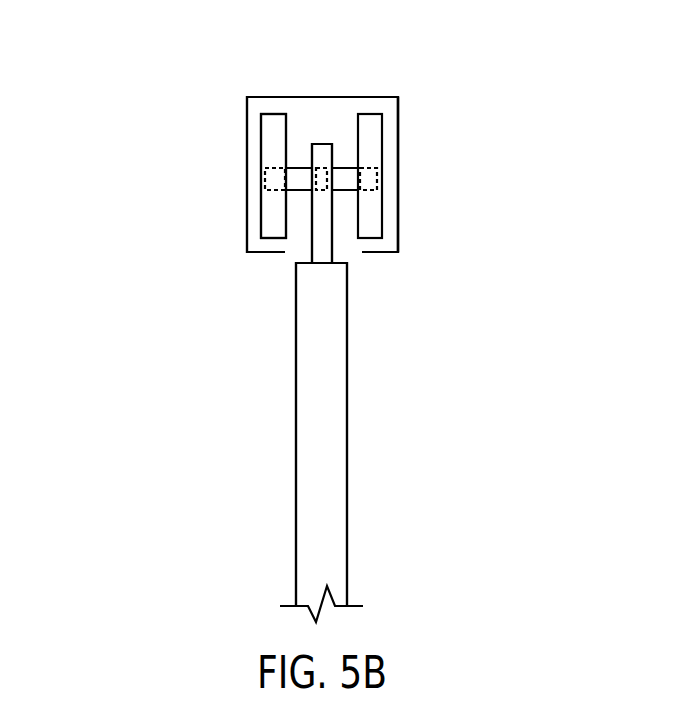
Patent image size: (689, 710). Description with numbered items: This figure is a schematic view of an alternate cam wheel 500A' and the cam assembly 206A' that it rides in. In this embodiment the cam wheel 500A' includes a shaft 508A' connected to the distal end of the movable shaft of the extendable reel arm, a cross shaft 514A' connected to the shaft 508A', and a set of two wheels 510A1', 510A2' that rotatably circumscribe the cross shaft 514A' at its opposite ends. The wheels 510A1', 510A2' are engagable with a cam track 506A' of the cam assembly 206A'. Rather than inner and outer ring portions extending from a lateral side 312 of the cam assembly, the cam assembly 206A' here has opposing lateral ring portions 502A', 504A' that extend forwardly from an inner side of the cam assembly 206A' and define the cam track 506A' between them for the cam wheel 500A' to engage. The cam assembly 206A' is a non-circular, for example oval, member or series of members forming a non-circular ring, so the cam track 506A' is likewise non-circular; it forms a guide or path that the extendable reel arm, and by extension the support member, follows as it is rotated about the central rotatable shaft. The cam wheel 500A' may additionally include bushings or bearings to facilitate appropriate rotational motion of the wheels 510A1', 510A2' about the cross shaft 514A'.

The cam wheel 500A' is at (382, 134).
The lateral ring portion 502A' is at (226, 172).
The cam track 506A' is at (179, 176).
The lateral ring portion 504A' is at (494, 174).
The cam assembly 206A' is at (477, 174).
The wheel 510A1' is at (211, 132).
The wheel 510A2' is at (452, 159).
The cross shaft 514A' is at (311, 118).
The lateral side 312 is at (342, 108).
The shaft 508A' is at (412, 205).